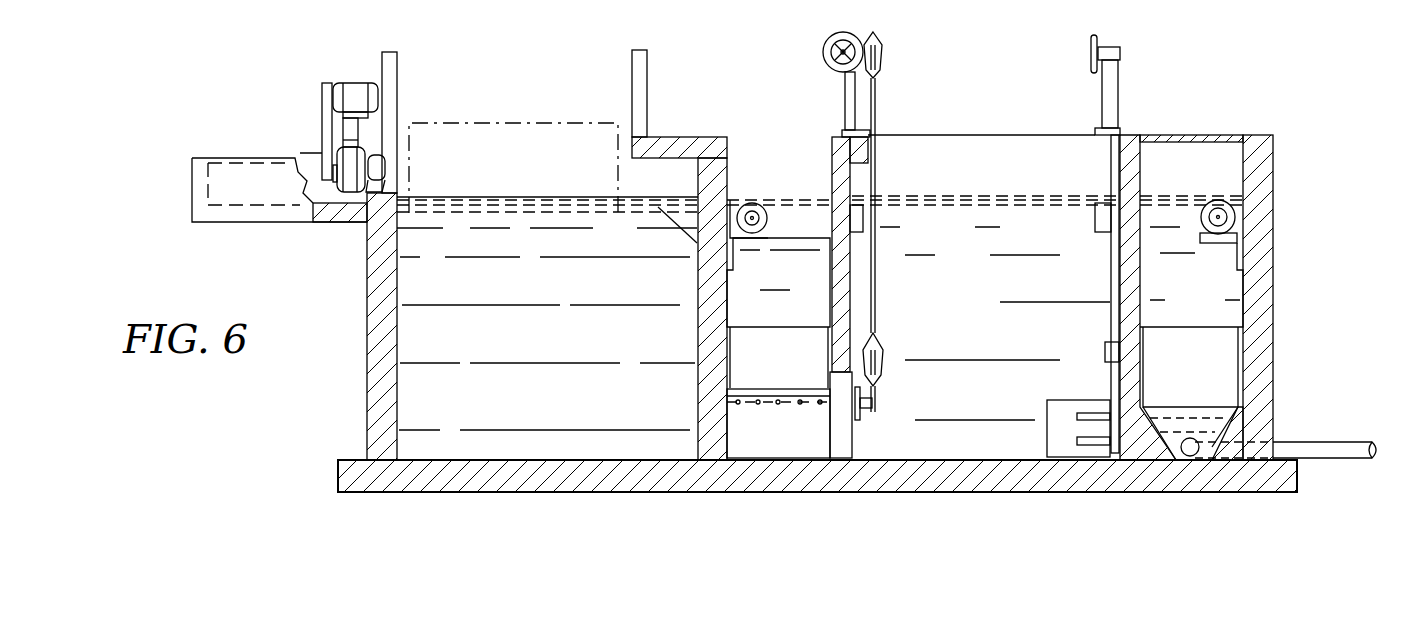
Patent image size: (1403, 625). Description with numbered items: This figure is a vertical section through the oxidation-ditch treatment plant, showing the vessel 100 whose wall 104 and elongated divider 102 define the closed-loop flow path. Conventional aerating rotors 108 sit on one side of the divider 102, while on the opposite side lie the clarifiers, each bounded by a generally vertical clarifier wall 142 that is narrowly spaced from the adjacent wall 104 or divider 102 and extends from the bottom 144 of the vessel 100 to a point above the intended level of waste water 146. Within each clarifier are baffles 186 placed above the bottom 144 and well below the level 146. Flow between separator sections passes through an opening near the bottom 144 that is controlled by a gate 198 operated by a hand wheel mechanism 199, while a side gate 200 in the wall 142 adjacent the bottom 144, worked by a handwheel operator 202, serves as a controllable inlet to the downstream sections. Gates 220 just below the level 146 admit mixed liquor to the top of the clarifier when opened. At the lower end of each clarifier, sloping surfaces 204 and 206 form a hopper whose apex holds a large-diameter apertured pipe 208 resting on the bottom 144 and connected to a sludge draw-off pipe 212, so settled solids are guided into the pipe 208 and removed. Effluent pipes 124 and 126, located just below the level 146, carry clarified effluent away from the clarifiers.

The vessel 100 is at (1273, 223).
The divider 102 is at (704, 312).
The wall 104 is at (1242, 162).
The aerating rotor 108 is at (546, 122).
The effluent pipe 124 is at (1226, 200).
The effluent pipe 126 is at (752, 203).
The clarifier wall 142 is at (851, 250).
The bottom 144 is at (966, 477).
The intended level of waste water 146 is at (1030, 182).
The baffle 186 is at (803, 361).
The gate 198 is at (800, 435).
The hand wheel mechanism 199 is at (825, 40).
The side gate 200 is at (1087, 396).
The handwheel operator 202 is at (1119, 88).
The sloping surface 204 is at (1166, 425).
The sloping surface 206 is at (1203, 457).
The pipe 208 is at (1213, 358).
The sludge draw-off pipe 212 is at (1366, 446).
The gate 220 is at (864, 216).